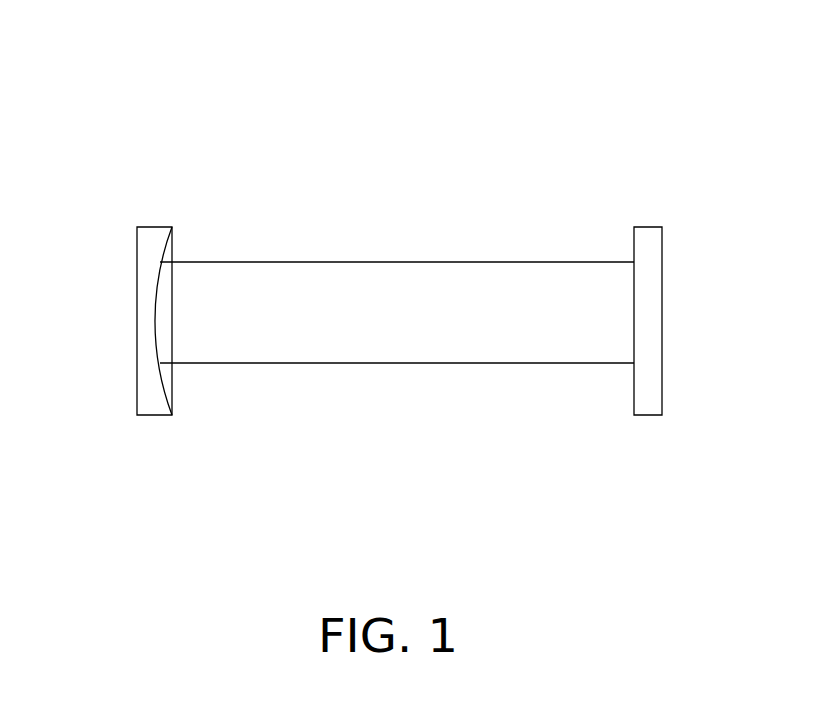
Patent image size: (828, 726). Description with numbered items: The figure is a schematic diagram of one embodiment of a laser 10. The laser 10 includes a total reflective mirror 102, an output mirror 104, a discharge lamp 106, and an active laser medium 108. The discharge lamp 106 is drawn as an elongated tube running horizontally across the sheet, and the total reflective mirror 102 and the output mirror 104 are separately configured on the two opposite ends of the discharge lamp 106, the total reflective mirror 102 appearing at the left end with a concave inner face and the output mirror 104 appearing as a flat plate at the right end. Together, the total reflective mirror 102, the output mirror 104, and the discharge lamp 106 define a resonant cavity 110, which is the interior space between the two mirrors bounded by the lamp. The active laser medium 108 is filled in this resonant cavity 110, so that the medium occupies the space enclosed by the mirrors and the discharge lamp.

The laser 10 is at (370, 80).
The total reflective mirror 102 is at (148, 226).
The output mirror 104 is at (650, 227).
The discharge lamp 106 is at (417, 262).
The active laser medium 108 is at (512, 277).
The resonant cavity 110 is at (465, 337).